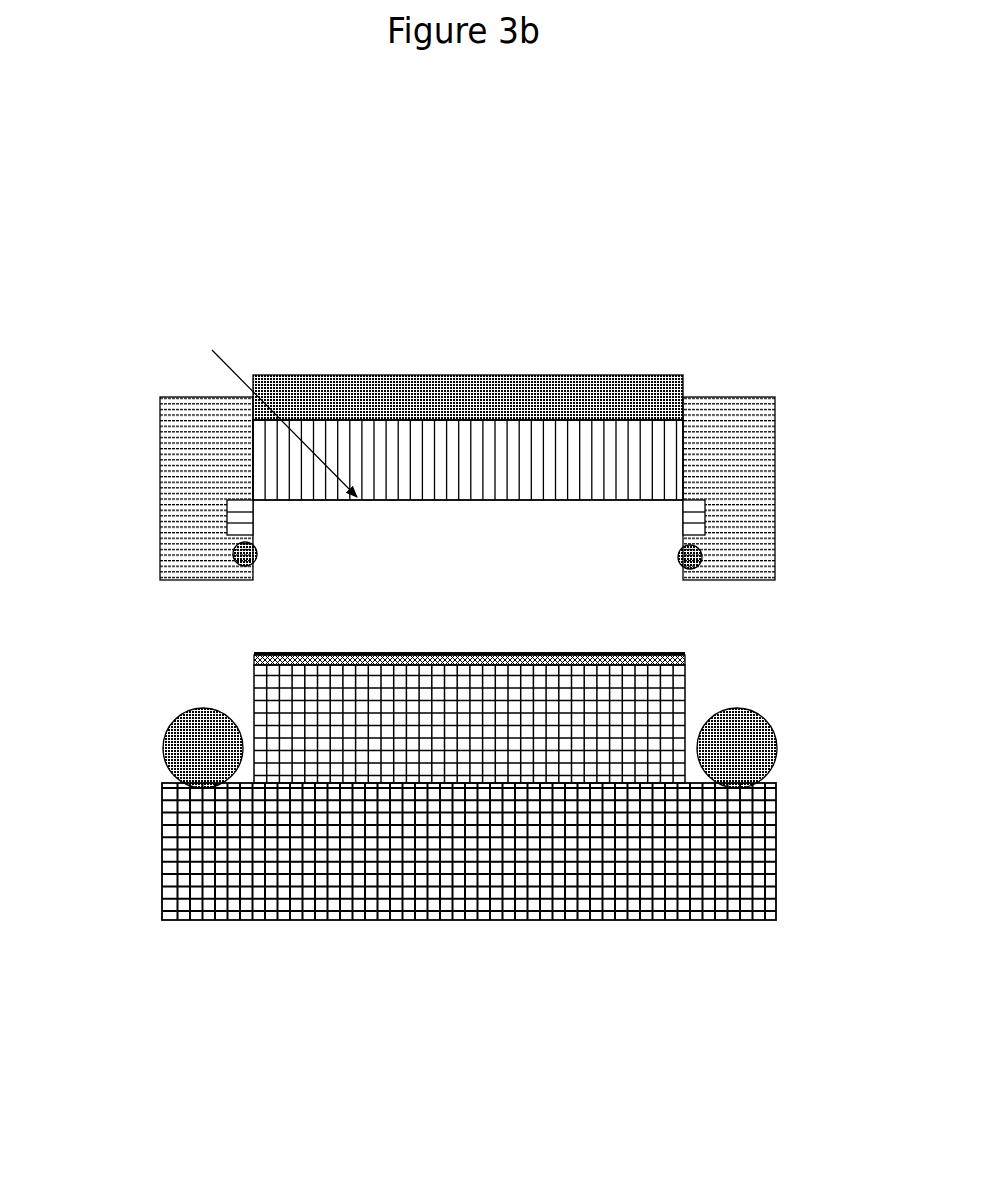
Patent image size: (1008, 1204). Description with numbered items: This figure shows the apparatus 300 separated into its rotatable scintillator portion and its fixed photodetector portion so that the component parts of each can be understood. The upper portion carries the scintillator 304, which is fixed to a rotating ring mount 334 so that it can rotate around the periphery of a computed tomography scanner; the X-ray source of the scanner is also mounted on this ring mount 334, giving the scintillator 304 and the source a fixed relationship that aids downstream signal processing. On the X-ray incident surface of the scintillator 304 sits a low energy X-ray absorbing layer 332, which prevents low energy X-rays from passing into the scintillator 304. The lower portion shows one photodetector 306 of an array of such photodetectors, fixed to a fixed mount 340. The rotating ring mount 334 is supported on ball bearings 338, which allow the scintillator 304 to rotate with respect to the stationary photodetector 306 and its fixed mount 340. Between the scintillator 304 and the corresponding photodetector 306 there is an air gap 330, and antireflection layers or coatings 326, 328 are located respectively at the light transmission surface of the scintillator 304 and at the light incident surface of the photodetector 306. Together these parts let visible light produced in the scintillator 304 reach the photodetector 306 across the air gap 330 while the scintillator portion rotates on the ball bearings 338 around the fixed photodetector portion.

The apparatus 300 is at (120, 215).
The scintillator 304 is at (422, 460).
The photodetector 306 is at (253, 657).
The antireflection layer 326 is at (707, 519).
The antireflection layer 328 is at (253, 500).
The air gap 330 is at (315, 513).
The low energy X-ray absorbing layer 332 is at (548, 375).
The rotating ring mount 334 is at (777, 487).
The ball bearings 338 is at (698, 565).
The fixed mount 340 is at (565, 733).